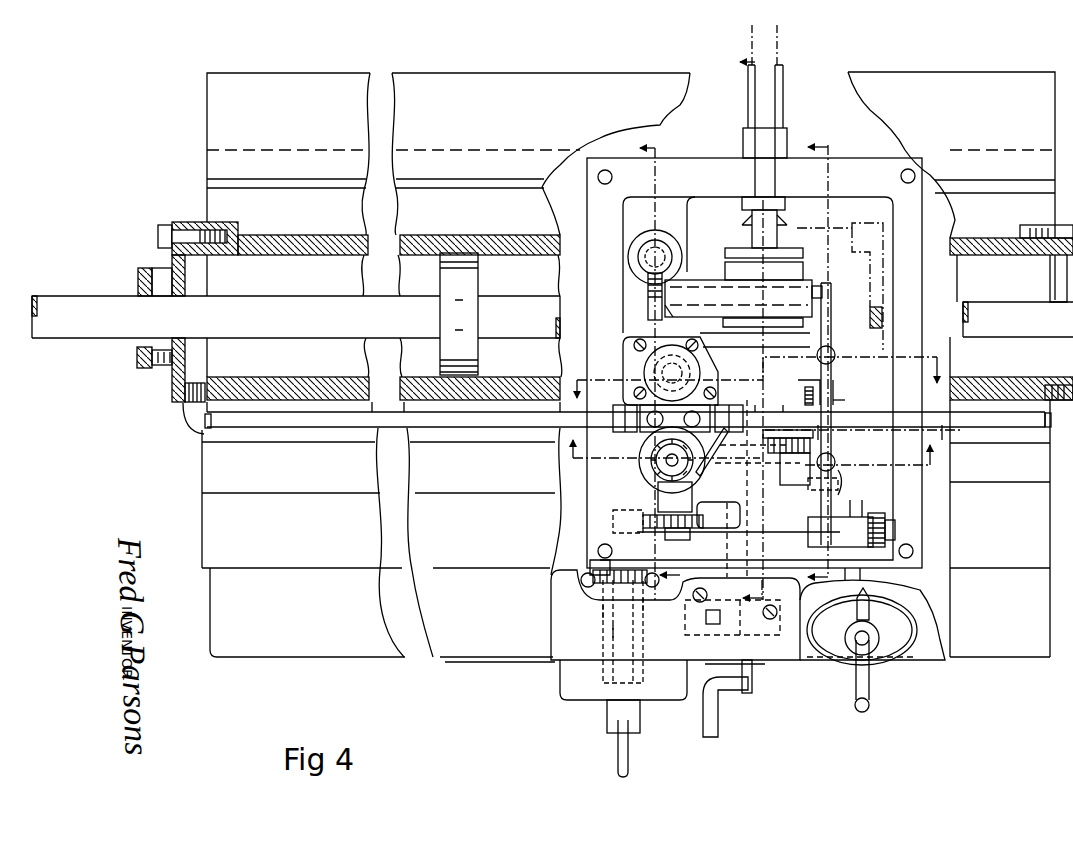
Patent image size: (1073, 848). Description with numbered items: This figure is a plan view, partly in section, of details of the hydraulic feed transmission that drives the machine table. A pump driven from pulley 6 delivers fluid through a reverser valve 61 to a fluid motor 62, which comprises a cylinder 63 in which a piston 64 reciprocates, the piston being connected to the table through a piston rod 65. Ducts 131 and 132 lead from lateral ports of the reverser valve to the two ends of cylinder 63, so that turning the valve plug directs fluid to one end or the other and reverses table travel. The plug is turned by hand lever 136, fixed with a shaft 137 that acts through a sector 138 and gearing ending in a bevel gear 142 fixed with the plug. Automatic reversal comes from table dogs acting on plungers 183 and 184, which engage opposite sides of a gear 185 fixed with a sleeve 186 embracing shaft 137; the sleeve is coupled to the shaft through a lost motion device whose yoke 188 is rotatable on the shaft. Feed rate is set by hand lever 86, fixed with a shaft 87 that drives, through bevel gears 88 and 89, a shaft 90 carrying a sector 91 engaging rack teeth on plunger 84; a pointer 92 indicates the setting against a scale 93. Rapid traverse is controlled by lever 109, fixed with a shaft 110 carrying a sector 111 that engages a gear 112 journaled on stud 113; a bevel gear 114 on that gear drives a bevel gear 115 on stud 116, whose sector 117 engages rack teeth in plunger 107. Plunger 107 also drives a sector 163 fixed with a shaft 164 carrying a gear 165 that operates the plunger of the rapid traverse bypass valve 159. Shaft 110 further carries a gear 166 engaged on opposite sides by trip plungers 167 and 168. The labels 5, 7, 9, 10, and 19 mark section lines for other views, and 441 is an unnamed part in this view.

The section line 5- 5 is at (758, 327).
The pulley 6 is at (752, 458).
The section line 7- 7 is at (826, 363).
The section line 9- 9 is at (662, 369).
The section line 10- 10 is at (752, 367).
The section line 19- 19 is at (862, 435).
The reverser valve 61 is at (648, 468).
The fluid motor 62 is at (518, 232).
The cylinder 63 is at (320, 370).
The piston 64 is at (480, 362).
The piston rod 65 is at (106, 340).
The plunger 84 is at (836, 470).
The hand lever 86 is at (870, 692).
The shaft 87 is at (861, 580).
The bevel gear 88 is at (840, 544).
The bevel gear 89 is at (880, 513).
The shaft 90 is at (858, 514).
The sector 91 is at (838, 472).
The pointer or index 92 is at (868, 610).
The scale 93 is at (898, 646).
The plunger 107 is at (831, 348).
The lever 109 is at (722, 722).
The shaft 110 is at (743, 647).
The sector 111 is at (760, 411).
The gear 112 is at (815, 447).
The stud 113 is at (796, 488).
The bevel gear 114 is at (784, 412).
The bevel gear 115 is at (806, 388).
The stud 116 is at (834, 402).
The sector 117 is at (834, 384).
The duct 131 is at (495, 428).
The duct 132 is at (1006, 422).
The hand lever 136 is at (627, 750).
The shaft 137 is at (617, 632).
The sector 138 is at (615, 530).
The bevel gear 142 is at (646, 446).
The rapid traverse bypass valve 159 is at (672, 245).
The sector 163 is at (830, 300).
The shaft 164 is at (678, 296).
The gear 165 is at (648, 300).
The gear 166 is at (698, 633).
The trip plunger 167 is at (689, 625).
The trip plunger 168 is at (768, 628).
The plunger 183 is at (585, 578).
The plunger 184 is at (650, 601).
The gear 185 is at (600, 566).
The sleeve 186 is at (604, 611).
The yoke 188 is at (603, 673).
The link rod 441 is at (701, 475).